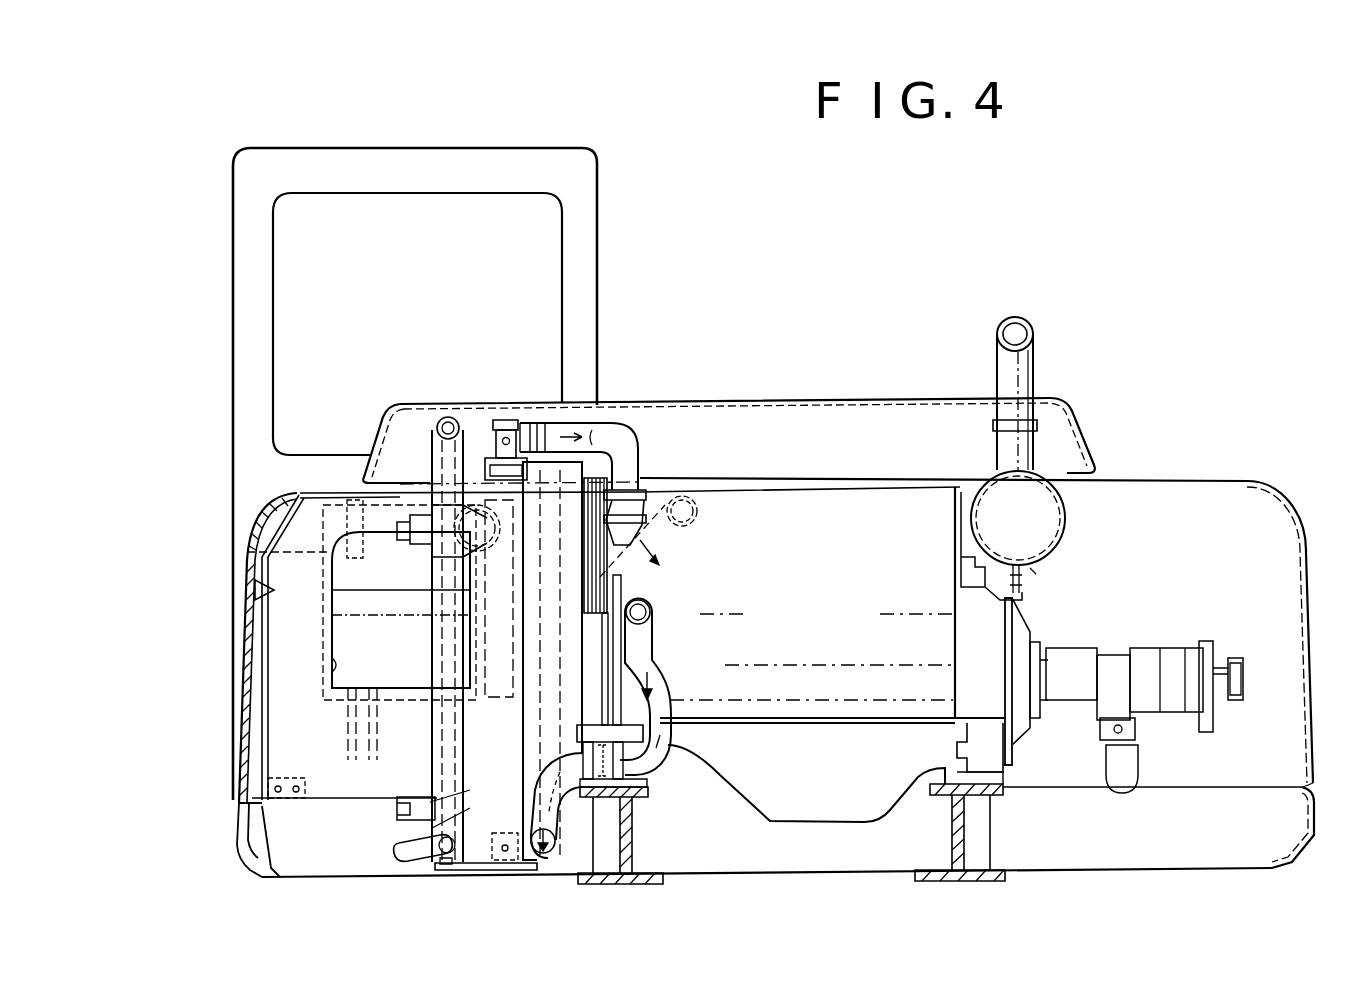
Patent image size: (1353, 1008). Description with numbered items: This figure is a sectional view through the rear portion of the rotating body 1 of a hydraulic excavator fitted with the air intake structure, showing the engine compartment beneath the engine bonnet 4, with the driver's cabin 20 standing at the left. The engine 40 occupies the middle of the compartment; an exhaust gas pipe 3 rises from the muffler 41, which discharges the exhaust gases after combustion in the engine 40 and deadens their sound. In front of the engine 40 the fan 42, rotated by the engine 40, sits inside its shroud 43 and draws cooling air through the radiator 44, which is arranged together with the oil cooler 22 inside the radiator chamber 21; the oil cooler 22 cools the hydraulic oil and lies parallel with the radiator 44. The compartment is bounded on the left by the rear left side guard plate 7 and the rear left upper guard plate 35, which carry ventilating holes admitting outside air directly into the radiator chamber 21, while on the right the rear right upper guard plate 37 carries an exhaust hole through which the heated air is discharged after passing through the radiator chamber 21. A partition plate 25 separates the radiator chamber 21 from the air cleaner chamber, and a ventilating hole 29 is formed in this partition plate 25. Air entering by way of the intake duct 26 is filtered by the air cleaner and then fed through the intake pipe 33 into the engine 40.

The rotating body 1 is at (797, 320).
The exhaust gas pipe 3 is at (1034, 336).
The engine bonnet 4 is at (1070, 400).
The rear left side guard plate 7 is at (255, 522).
The driver's cabin 20 is at (233, 206).
The radiator chamber 21 is at (342, 740).
The oil cooler 22 is at (432, 432).
The partition plate 25 is at (258, 646).
The intake duct 26 is at (247, 556).
The ventilating hole 29 is at (335, 668).
The intake pipe 33 is at (696, 521).
The rear left upper guard plate 35 is at (300, 490).
The rear right upper guard plate 37 is at (1203, 480).
The engine 40 is at (812, 518).
The muffler 41 is at (990, 478).
The fan 42 is at (590, 700).
The shroud 43 is at (592, 462).
The radiator 44 is at (486, 452).